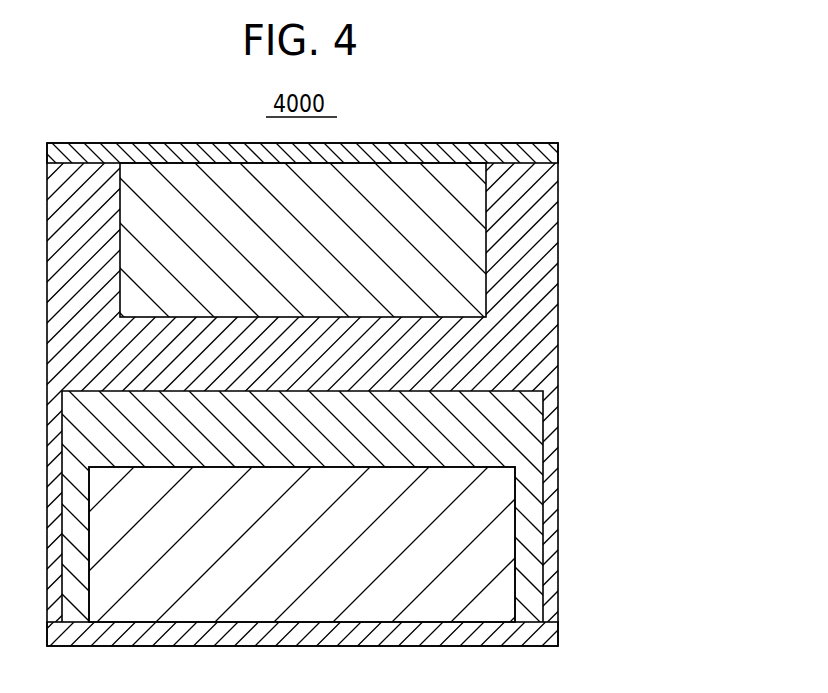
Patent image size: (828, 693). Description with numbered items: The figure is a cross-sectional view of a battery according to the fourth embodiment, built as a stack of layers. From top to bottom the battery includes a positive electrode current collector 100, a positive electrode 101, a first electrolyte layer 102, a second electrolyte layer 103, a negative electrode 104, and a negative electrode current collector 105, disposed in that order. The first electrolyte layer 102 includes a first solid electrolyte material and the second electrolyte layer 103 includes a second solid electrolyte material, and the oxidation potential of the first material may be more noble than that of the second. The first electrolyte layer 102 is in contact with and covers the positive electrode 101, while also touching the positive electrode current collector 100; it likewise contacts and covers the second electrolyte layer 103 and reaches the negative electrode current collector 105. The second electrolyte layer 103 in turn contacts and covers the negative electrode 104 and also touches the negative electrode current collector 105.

The positive electrode current collector 100 is at (550, 150).
The positive electrode 101 is at (445, 223).
The first electrolyte layer 102 is at (525, 348).
The second electrolyte layer 103 is at (515, 433).
The negative electrode 104 is at (477, 528).
The negative electrode current collector 105 is at (537, 635).